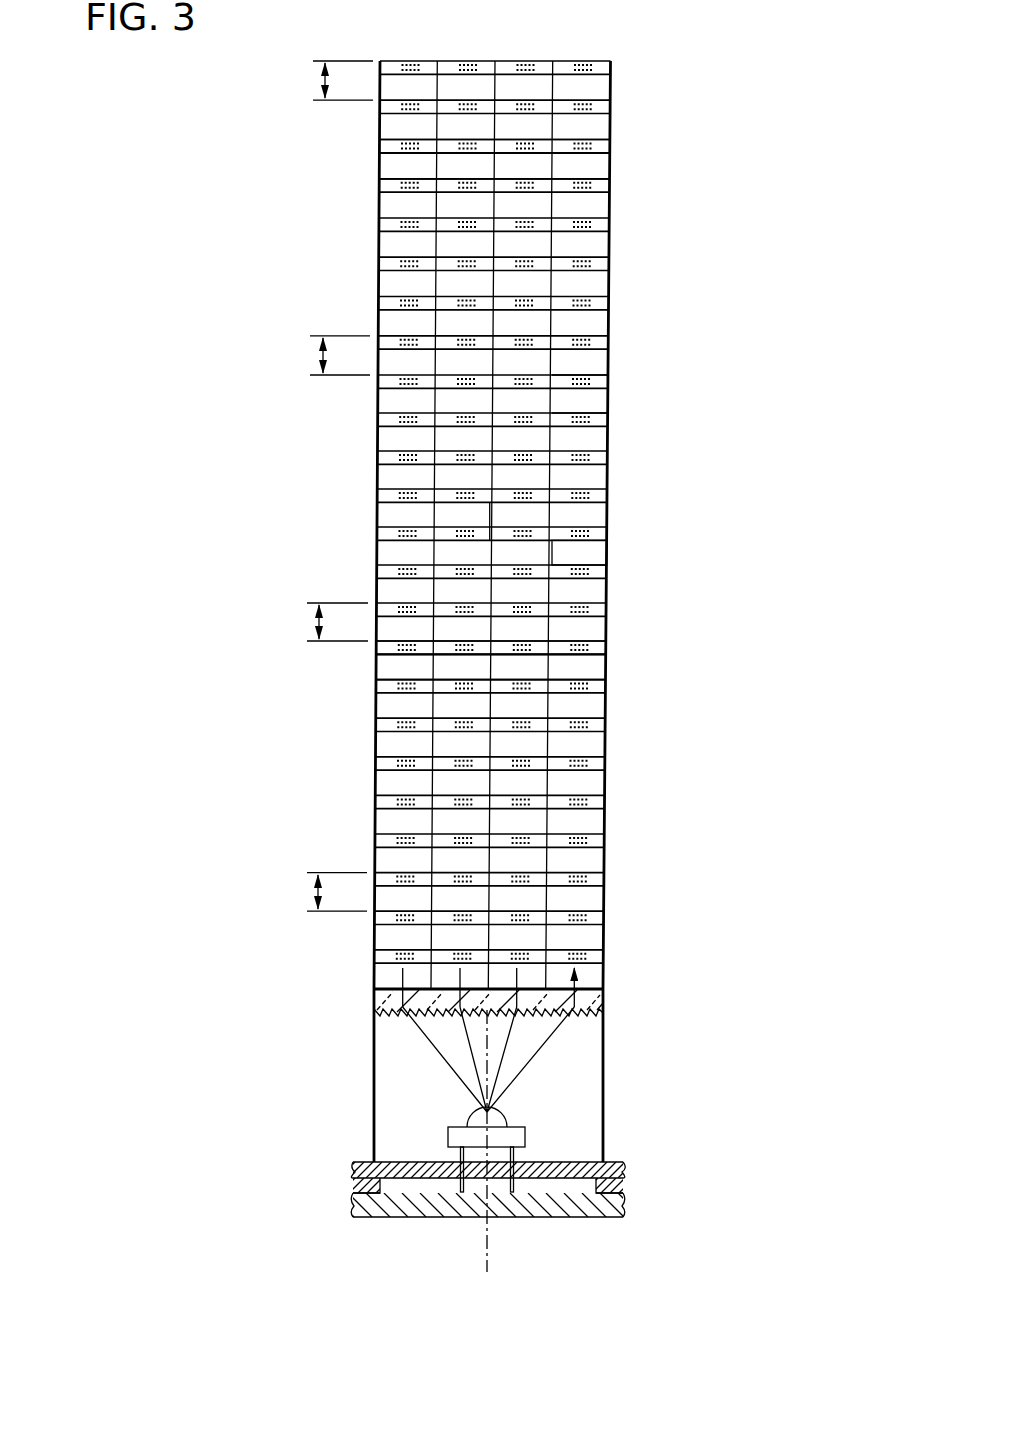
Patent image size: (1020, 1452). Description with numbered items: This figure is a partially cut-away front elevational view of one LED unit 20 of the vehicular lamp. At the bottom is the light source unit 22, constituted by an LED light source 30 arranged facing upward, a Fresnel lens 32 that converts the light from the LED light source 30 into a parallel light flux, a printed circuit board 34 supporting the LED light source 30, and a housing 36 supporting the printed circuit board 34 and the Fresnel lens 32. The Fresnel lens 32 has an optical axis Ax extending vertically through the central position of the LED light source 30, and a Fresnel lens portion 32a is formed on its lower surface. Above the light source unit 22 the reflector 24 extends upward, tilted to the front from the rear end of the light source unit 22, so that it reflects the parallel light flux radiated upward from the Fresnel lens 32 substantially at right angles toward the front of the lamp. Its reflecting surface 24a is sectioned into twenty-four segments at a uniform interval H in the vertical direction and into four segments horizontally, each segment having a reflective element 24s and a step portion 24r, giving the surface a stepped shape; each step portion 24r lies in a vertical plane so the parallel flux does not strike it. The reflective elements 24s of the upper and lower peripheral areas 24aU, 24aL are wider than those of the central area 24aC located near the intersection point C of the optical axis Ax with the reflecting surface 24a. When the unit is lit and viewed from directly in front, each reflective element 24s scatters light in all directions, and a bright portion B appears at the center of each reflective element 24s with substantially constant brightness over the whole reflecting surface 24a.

The LED unit 20 is at (278, 405).
The light source unit 22 is at (372, 1053).
The reflector 24 is at (375, 475).
The reflecting surface 24a is at (572, 520).
The upper peripheral area 24aU is at (413, 203).
The central area 24aC is at (400, 548).
The lower peripheral area 24aL is at (400, 822).
The reflective element 24s is at (600, 147).
The step portion 24r is at (595, 169).
The LED light source 30 is at (475, 1118).
The Fresnel lens 32 is at (593, 1000).
The Fresnel lens portion 32a is at (585, 1018).
The printed circuit board 34 is at (570, 1163).
The housing 36 is at (553, 1208).
The bright portion B is at (587, 412).
The intersection point C is at (493, 527).
The optical axis Ax is at (492, 783).
The uniform interval H is at (330, 486).